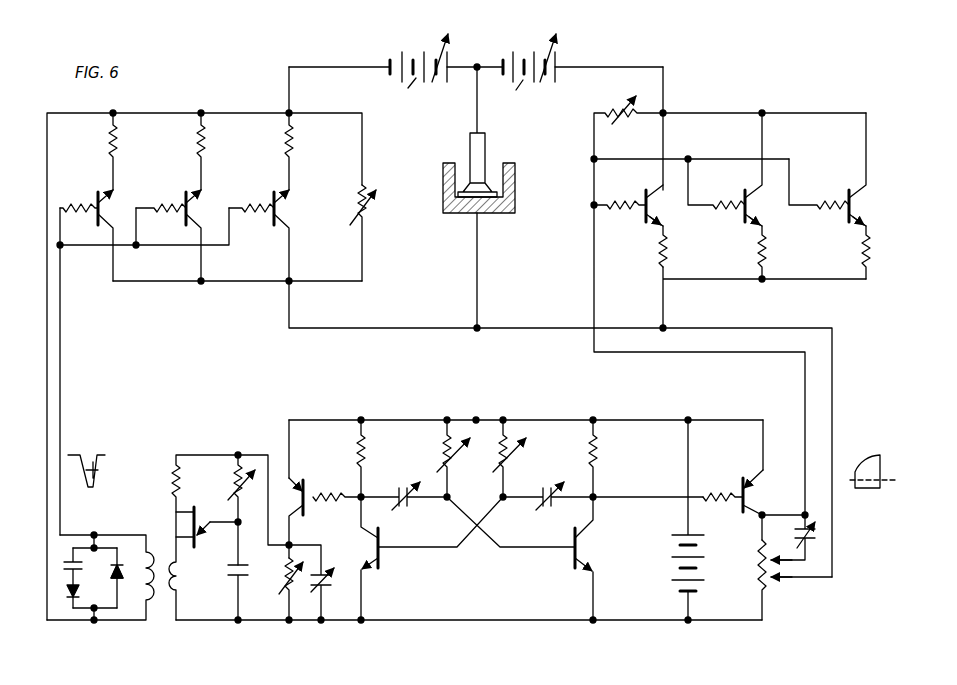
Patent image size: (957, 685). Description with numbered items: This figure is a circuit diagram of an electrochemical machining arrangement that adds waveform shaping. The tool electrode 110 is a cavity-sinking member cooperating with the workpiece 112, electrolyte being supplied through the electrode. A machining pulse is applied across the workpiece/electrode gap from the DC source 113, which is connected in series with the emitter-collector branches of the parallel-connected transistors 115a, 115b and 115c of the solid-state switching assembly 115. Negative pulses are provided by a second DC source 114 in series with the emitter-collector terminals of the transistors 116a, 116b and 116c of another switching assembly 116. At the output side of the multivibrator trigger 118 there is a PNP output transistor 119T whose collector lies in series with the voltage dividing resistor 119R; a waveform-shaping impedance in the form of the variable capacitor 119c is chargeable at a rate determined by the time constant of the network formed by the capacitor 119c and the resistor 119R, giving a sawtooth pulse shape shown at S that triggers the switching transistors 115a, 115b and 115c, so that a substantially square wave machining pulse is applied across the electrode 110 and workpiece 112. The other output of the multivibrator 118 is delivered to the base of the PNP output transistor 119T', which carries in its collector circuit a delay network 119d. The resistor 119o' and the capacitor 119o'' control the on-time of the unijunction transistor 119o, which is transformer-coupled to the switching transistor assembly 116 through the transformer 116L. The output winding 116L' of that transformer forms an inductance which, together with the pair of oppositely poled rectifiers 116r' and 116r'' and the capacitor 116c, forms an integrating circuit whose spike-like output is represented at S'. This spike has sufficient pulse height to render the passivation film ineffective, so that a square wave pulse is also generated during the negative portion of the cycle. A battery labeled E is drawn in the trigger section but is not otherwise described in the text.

The tool electrode 110 is at (468, 150).
The workpiece 112 is at (446, 204).
The DC source 113 is at (555, 52).
The DC source 114 is at (402, 52).
The solid-state switching assembly 115 is at (668, 66).
The transistor 115a is at (640, 220).
The transistor 115b is at (740, 200).
The transistor 115c is at (846, 200).
The switching assembly 116 is at (190, 110).
The transistor 116a is at (92, 200).
The transistor 116b is at (180, 200).
The transistor / capacitor 116c is at (268, 200).
The transformer 116L is at (100, 599).
The output winding 116L' is at (209, 536).
The rectifier 116r' is at (57, 625).
The rectifier 116r'' is at (136, 539).
The multivibrator trigger 118 is at (463, 623).
The output transistor 119T is at (733, 467).
The output transistor 119T' is at (325, 489).
The unijunction transistor 119o is at (207, 506).
The resistor 119o' is at (245, 492).
The capacitor 119o'' is at (217, 592).
The delay network 119d is at (298, 625).
The variable capacitor 119c is at (814, 540).
The voltage dividing resistor 119R is at (772, 600).
The battery E is at (694, 520).
The pulse shape S is at (873, 459).
The spikelike output S' is at (97, 455).